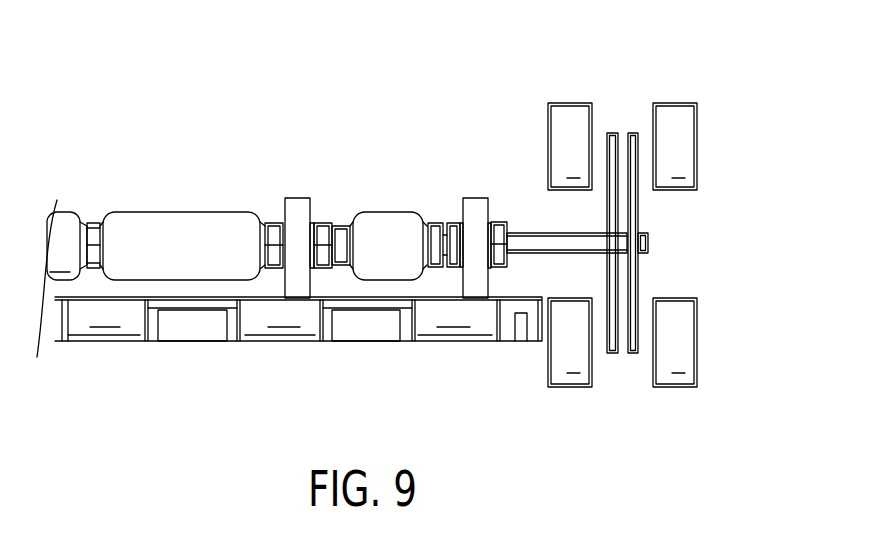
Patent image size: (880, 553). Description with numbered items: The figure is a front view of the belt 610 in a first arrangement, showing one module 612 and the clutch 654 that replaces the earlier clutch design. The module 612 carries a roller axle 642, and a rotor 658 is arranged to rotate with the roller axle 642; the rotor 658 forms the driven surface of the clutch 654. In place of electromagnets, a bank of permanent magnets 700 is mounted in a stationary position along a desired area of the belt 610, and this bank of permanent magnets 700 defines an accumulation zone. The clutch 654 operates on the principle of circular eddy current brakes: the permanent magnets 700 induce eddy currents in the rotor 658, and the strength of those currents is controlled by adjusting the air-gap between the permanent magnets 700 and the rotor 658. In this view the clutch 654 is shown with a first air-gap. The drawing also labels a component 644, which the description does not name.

The belt 610 is at (293, 135).
The piston/displacer housing 644 is at (184, 221).
The module 612 is at (185, 326).
The roller axle 642 is at (565, 254).
The clutch 654 is at (740, 113).
The rotor 658 is at (613, 283).
The permanent magnets 700 is at (676, 103).